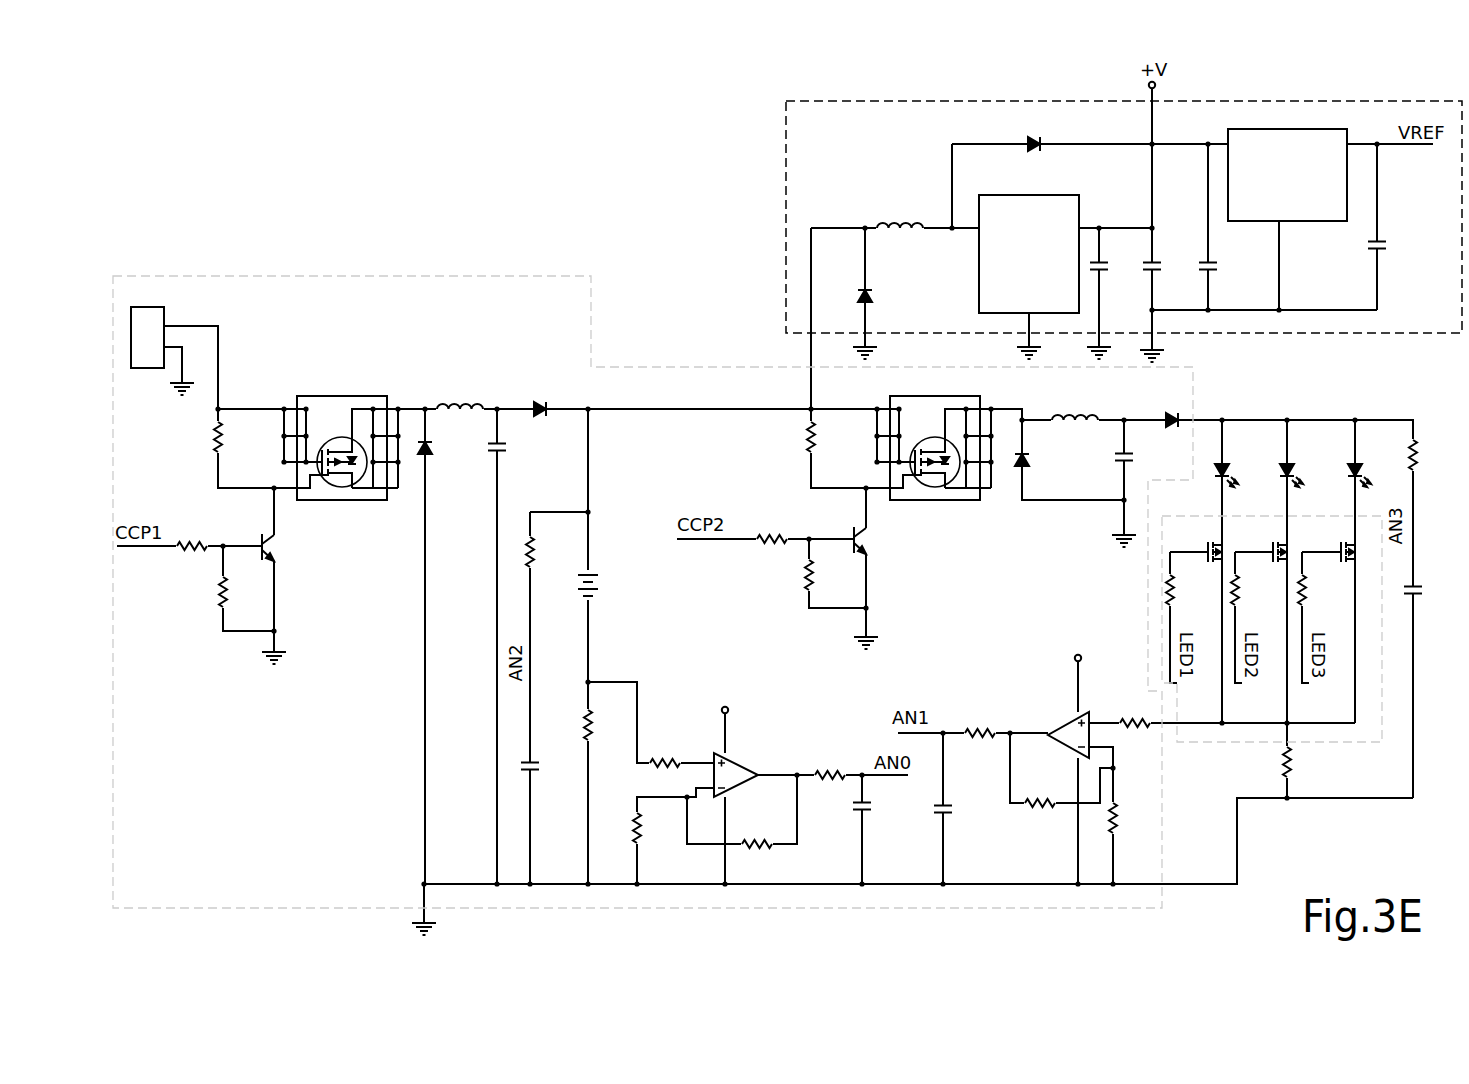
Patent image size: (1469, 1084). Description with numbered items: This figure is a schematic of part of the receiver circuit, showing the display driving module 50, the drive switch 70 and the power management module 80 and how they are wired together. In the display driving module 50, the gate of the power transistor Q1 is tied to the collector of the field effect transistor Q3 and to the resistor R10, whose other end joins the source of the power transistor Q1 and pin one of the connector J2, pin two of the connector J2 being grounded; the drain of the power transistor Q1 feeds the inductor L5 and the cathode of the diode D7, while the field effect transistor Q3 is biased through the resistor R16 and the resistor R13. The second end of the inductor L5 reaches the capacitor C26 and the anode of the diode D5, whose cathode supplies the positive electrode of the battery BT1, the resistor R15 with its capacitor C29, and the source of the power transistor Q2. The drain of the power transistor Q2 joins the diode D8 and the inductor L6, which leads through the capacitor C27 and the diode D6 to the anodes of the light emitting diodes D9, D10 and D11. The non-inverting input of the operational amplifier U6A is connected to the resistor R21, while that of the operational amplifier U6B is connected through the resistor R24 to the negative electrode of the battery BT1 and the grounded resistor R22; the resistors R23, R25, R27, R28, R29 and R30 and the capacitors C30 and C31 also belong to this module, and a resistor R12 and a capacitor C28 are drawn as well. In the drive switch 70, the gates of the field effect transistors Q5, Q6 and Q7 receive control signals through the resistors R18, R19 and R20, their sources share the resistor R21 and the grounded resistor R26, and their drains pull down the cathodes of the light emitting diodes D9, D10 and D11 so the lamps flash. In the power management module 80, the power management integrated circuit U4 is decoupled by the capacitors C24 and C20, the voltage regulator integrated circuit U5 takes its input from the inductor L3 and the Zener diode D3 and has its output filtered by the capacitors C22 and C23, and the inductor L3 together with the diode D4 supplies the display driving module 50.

The display driving module 50 is at (548, 276).
The drive switch 70 is at (1214, 743).
The power management module 80 is at (786, 195).
The connector J2 is at (147, 325).
The power transistor Q1 is at (340, 435).
The power transistor Q2 is at (933, 435).
The field effect transistor Q3 is at (285, 547).
The field effect transistor Q5 is at (1198, 544).
The field effect transistor Q6 is at (1263, 544).
The field effect transistor Q7 is at (1331, 544).
The resistor R10 is at (237, 437).
The resistor R12 is at (1431, 455).
The resistor R13 is at (193, 533).
The resistor R15 is at (549, 552).
The resistor R16 is at (242, 592).
The resistor R18 is at (1188, 590).
The resistor R19 is at (1253, 590).
The resistor R20 is at (1320, 590).
The resistor R21 is at (1136, 712).
The resistor R22 is at (606, 725).
The resistor R23 is at (980, 721).
The resistor R24 is at (665, 752).
The resistor R25 is at (833, 601).
The resistor R26 is at (1307, 762).
The resistor R27 is at (655, 828).
The resistor R28 is at (1038, 791).
The resistor R29 is at (1131, 818).
The resistor R30 is at (759, 832).
The capacitor C20 is at (1399, 246).
The capacitor C22 is at (1112, 280).
The capacitor C23 is at (1167, 280).
The capacitor C24 is at (1228, 268).
The capacitor C26 is at (514, 449).
The capacitor C27 is at (1145, 460).
The capacitor C28 is at (1432, 591).
The capacitor C29 is at (547, 766).
The capacitor C30 is at (878, 806).
The capacitor C31 is at (960, 809).
The Zener diode D3 is at (1034, 131).
The diode D4 is at (881, 297).
The diode D5 is at (539, 395).
The diode D6 is at (1170, 403).
The diode D7 is at (440, 449).
The diode D8 is at (1038, 462).
The light emitting diode D9 is at (1234, 466).
The light emitting diode D10 is at (1305, 466).
The light emitting diode D11 is at (1372, 466).
The inductor L3 is at (900, 213).
The inductor L5 is at (460, 395).
The inductor L6 is at (1075, 403).
The power management integrated circuit U4 is at (1287, 164).
The voltage regulator integrated circuit U5 is at (1029, 242).
The operational amplifier U6A is at (1061, 694).
The operational amplifier U6B is at (744, 739).
The battery BT1 is at (607, 585).